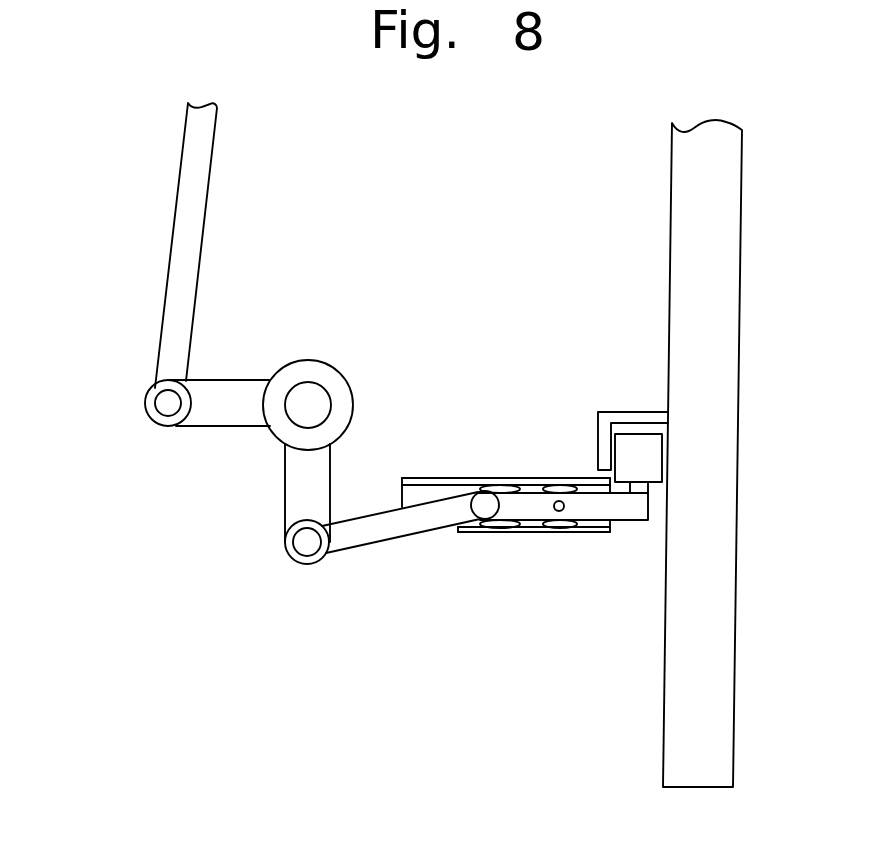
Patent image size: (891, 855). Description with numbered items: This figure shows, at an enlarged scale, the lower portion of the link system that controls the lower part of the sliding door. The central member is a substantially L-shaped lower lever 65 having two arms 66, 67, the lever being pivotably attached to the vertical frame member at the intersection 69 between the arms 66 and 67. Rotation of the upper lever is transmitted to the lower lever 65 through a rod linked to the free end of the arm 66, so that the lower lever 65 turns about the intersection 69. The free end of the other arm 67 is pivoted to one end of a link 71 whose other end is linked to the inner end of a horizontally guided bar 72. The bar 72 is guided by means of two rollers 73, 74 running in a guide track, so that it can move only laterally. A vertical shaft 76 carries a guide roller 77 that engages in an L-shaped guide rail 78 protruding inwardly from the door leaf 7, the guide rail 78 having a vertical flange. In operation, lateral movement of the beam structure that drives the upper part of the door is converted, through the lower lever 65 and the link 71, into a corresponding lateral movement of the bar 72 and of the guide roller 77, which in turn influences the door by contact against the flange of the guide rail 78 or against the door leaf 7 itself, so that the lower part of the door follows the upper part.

The door blade 7 is at (718, 295).
The lower lever 65 is at (213, 477).
The arm 66 is at (222, 392).
The arm 67 is at (297, 493).
The intersection 69 is at (328, 373).
The link 71 is at (185, 229).
The horizontally guided bar 72 is at (532, 510).
The roller 73 is at (492, 487).
The roller 74 is at (560, 530).
The vertical shaft 76 is at (642, 487).
The guide roller 77 is at (656, 460).
The L-shaped guide rail 78 is at (607, 398).